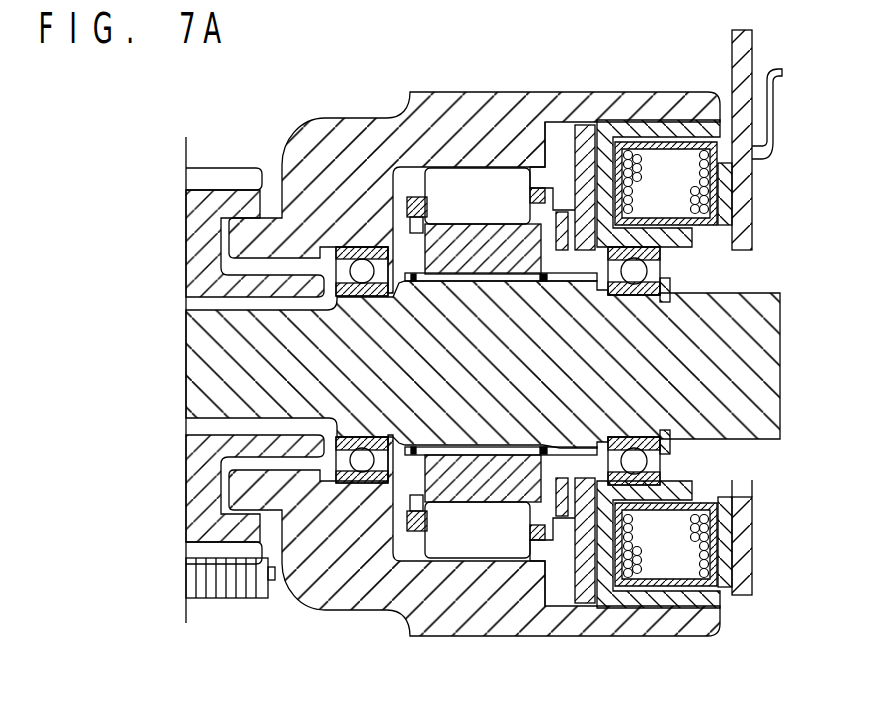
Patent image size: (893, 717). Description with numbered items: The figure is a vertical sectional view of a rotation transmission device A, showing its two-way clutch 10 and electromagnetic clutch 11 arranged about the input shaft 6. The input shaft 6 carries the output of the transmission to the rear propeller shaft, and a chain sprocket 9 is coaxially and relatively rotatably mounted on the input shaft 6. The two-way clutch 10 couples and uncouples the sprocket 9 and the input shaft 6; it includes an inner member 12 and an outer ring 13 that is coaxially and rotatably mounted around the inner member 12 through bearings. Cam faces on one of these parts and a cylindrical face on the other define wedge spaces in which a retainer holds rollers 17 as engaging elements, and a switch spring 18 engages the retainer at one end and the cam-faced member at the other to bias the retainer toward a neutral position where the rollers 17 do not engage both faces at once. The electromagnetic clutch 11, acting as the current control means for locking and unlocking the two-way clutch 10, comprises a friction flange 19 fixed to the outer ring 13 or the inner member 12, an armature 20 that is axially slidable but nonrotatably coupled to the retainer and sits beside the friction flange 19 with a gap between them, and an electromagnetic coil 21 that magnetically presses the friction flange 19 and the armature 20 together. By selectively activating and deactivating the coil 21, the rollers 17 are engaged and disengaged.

The input shaft 6 is at (758, 369).
The chain sprocket 9 is at (218, 182).
The two-way clutch 10 is at (446, 158).
The electromagnetic clutch 11 is at (656, 115).
The inner member 12 is at (420, 238).
The outer ring 13 is at (393, 120).
The rollers 17 is at (490, 188).
The switch spring 18 is at (520, 495).
The friction flange 19 is at (597, 122).
The armature 20 is at (563, 125).
The electromagnetic coil 21 is at (752, 193).
The rotation transmission device A is at (371, 624).